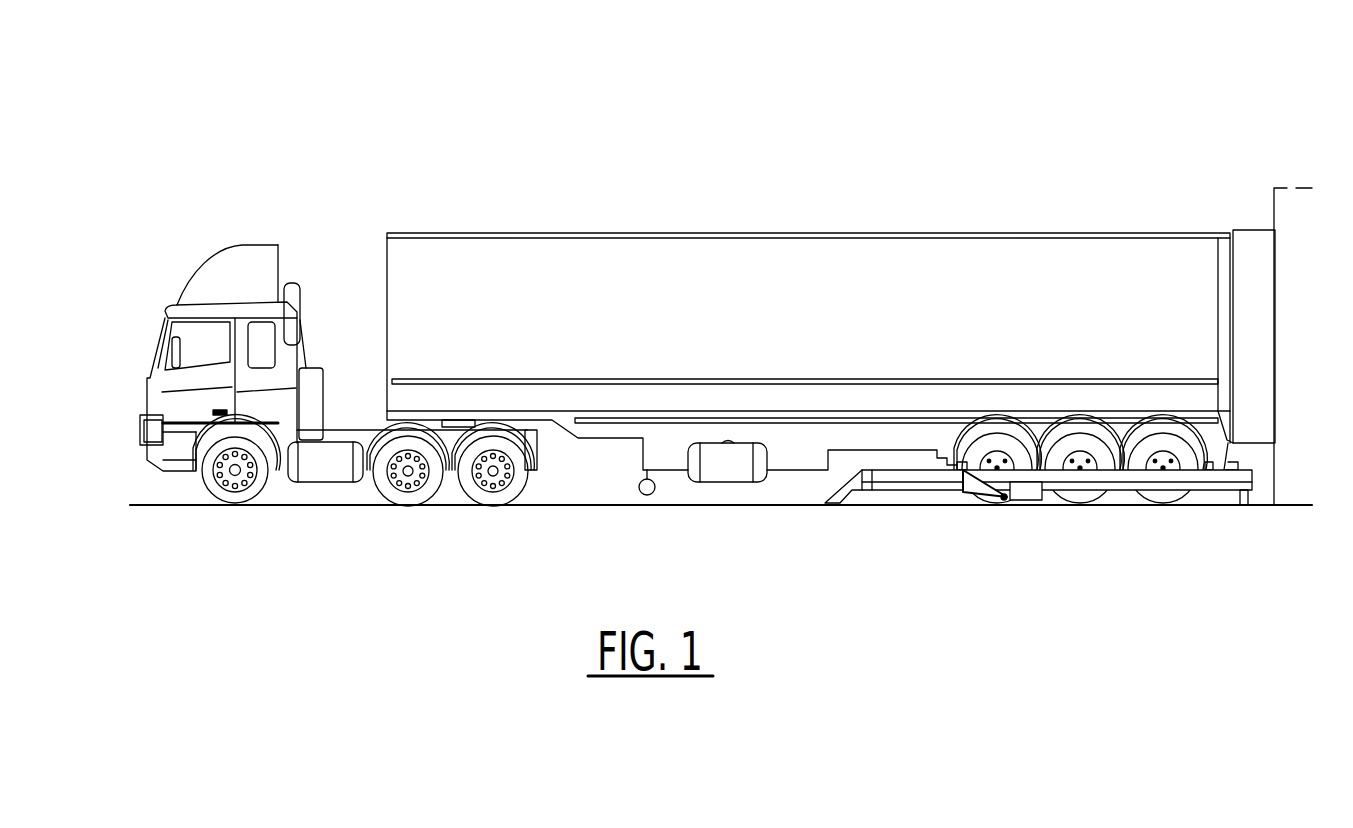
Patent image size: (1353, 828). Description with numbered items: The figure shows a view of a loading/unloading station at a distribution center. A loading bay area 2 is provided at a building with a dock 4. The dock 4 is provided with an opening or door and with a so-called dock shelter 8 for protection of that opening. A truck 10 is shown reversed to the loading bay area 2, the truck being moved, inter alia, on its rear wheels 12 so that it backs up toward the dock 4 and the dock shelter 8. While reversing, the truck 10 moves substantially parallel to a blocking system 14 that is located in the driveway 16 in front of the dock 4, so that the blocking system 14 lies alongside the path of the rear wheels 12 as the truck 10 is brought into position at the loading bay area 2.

The loading bay area 2 is at (955, 142).
The dock 4 is at (1291, 202).
The dock shelter 8 is at (1253, 245).
The truck 10 is at (698, 253).
The rear wheels 12 is at (1000, 445).
The blocking system 14 is at (880, 541).
The driveway 16 is at (122, 468).